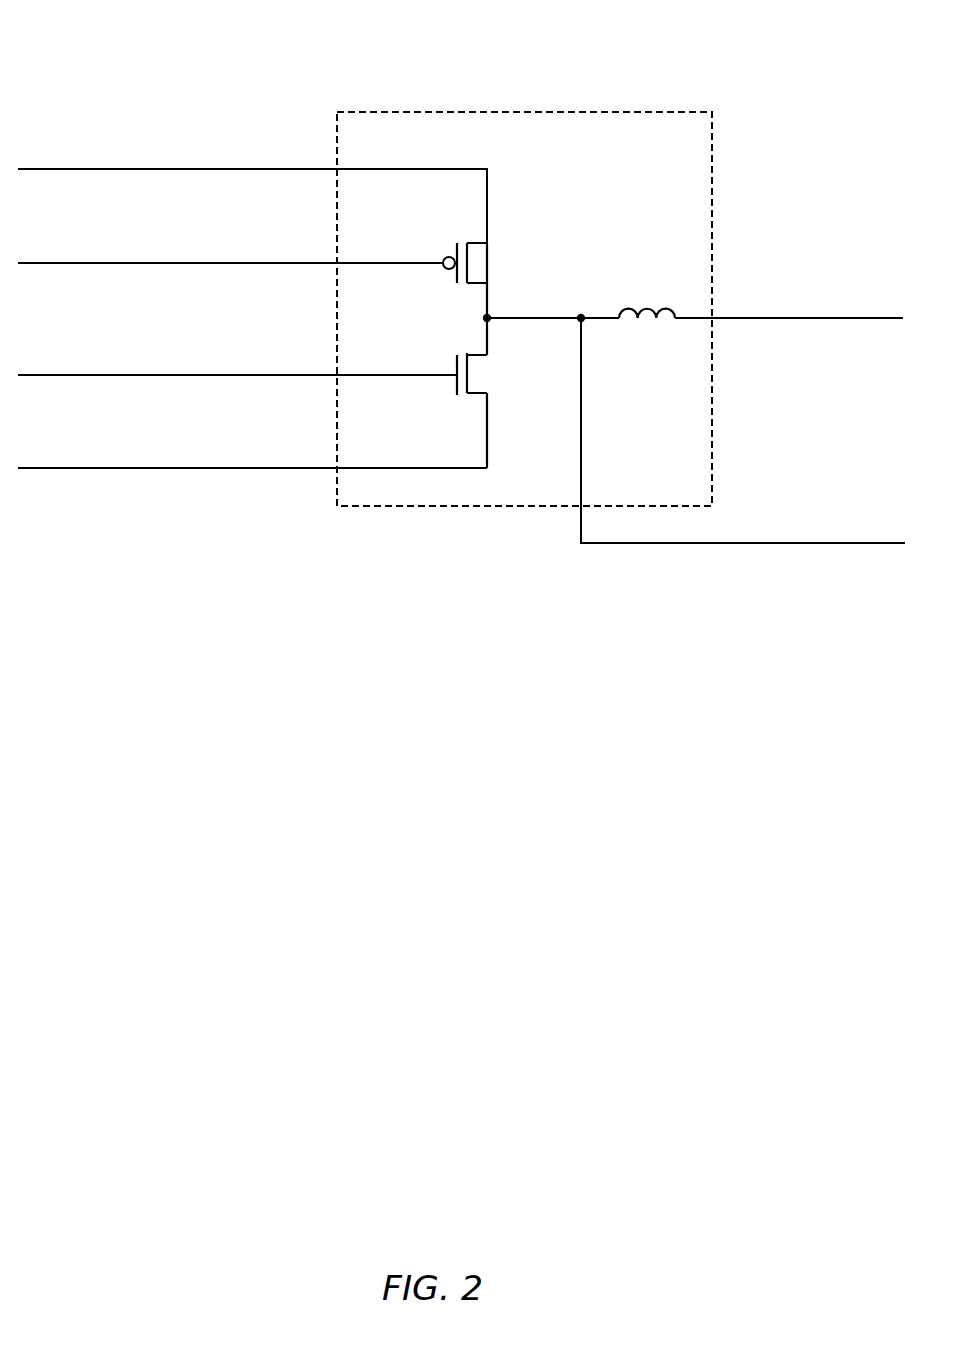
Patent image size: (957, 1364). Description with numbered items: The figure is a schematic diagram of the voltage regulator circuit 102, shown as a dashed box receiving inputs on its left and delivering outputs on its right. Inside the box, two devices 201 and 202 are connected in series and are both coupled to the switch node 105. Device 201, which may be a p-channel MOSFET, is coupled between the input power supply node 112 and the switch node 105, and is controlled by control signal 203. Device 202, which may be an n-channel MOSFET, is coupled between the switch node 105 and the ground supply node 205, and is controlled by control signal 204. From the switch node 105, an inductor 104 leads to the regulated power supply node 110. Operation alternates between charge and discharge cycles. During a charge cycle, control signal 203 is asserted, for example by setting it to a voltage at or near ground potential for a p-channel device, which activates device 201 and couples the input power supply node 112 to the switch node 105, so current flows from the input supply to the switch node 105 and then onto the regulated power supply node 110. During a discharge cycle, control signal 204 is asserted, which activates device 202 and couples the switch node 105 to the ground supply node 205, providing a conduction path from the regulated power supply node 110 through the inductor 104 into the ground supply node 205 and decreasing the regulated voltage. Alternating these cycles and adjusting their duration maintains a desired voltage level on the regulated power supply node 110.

The voltage regulator circuit 102 is at (613, 112).
The input power supply node 112 is at (252, 194).
The control signal 203 is at (230, 263).
The control signal 204 is at (237, 374).
The ground supply node 205 is at (252, 471).
The device 201 is at (481, 264).
The device 202 is at (481, 376).
The inductor 104 is at (666, 304).
The regulated power supply node 110 is at (789, 308).
The switch node 105 is at (743, 443).